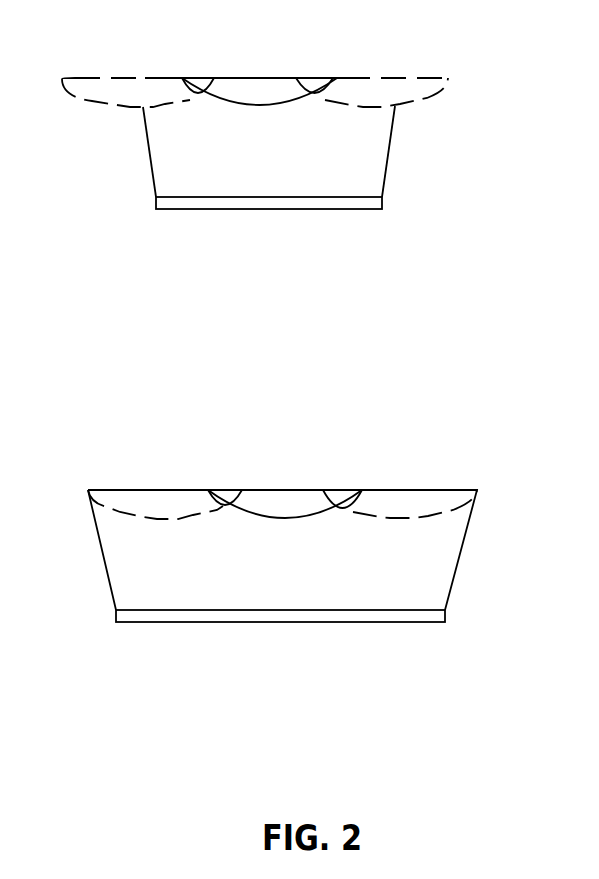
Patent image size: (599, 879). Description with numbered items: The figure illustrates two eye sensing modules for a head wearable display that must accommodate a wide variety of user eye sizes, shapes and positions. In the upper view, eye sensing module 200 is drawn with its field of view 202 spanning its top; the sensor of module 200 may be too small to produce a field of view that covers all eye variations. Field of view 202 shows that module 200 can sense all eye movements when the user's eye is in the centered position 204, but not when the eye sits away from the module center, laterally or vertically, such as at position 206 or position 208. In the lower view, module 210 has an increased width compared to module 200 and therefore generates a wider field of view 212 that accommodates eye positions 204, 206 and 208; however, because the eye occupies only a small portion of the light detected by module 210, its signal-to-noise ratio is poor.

The eye sensing module 200 is at (362, 210).
The field of view 202 is at (362, 152).
The eye position 204 is at (267, 92).
The eye position 206 is at (147, 87).
The eye position 208 is at (380, 82).
The eye sensing module 210 is at (418, 617).
The field of view 212 is at (418, 562).